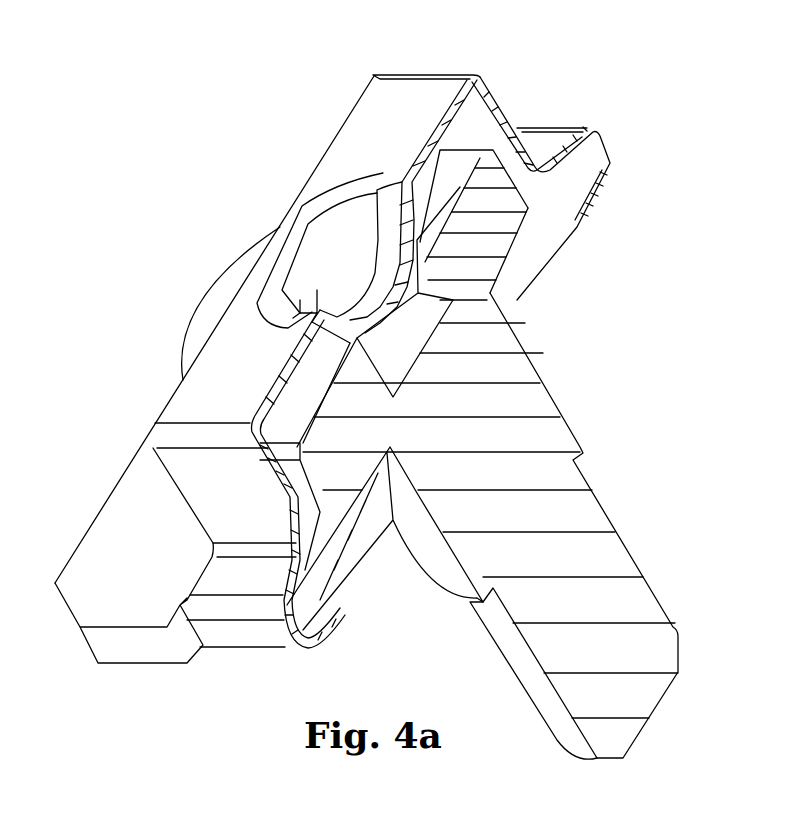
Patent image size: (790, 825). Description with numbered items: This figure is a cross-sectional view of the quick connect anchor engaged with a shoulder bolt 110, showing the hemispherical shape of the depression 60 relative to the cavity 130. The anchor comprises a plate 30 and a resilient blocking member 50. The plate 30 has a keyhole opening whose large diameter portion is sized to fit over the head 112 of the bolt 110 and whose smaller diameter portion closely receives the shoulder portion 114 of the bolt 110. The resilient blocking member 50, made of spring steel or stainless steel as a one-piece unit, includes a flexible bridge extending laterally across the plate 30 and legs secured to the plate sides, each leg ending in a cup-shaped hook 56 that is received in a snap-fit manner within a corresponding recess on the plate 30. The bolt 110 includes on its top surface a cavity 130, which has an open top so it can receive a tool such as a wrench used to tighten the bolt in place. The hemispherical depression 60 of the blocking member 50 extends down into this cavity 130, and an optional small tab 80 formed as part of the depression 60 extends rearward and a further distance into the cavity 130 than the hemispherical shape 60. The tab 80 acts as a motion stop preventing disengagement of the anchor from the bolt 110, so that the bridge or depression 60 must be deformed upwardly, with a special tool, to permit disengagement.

The plate 30 is at (353, 563).
The resilient blocking member 50 is at (387, 115).
The cup-shaped hook 56 is at (598, 150).
The hemispherical depression 60 is at (390, 217).
The tab 80 is at (352, 290).
The shoulder bolt 110 is at (187, 328).
The head 112 is at (500, 175).
The shoulder portion 114 is at (560, 413).
The cavity 130 is at (407, 330).